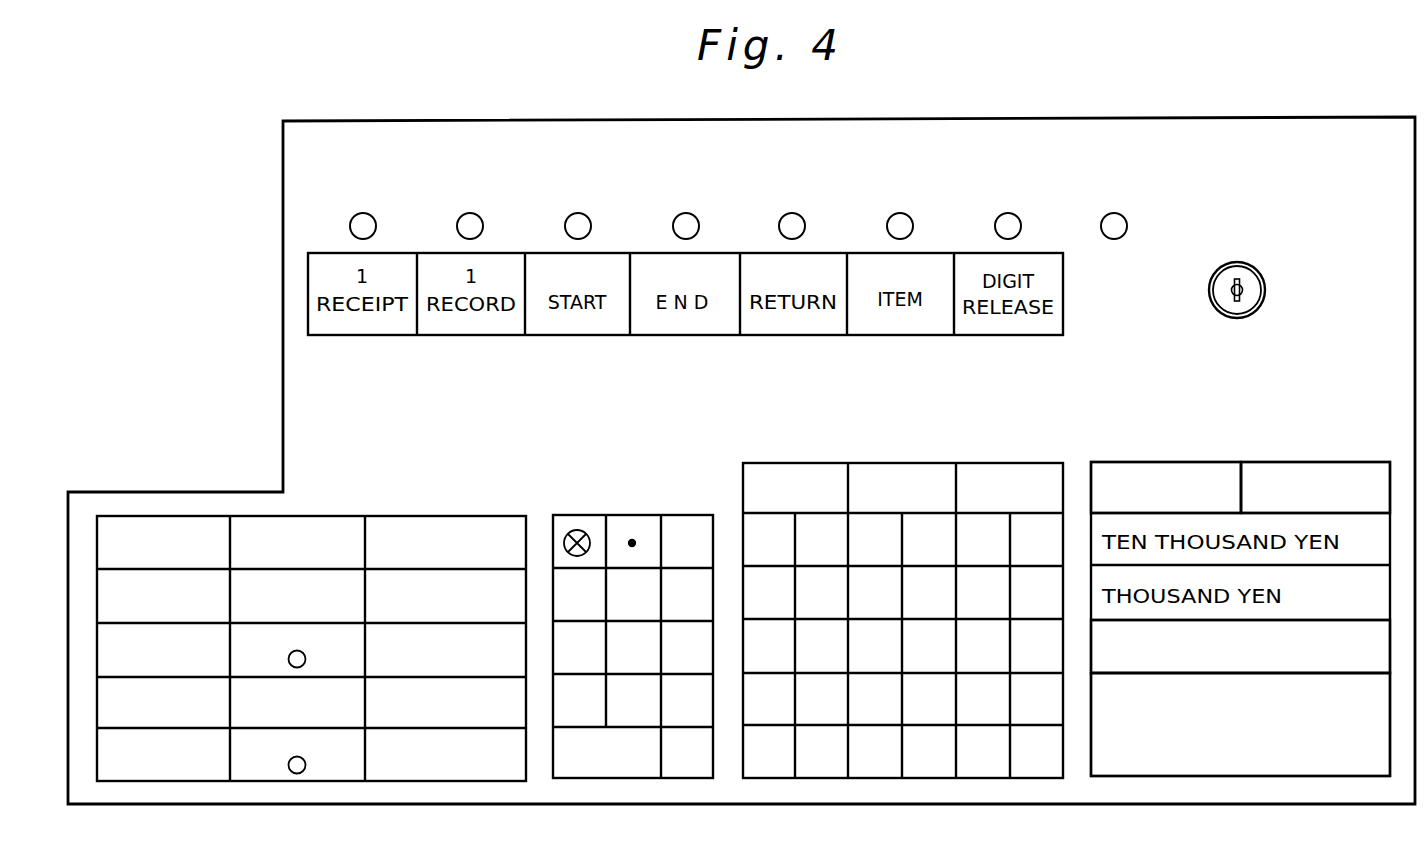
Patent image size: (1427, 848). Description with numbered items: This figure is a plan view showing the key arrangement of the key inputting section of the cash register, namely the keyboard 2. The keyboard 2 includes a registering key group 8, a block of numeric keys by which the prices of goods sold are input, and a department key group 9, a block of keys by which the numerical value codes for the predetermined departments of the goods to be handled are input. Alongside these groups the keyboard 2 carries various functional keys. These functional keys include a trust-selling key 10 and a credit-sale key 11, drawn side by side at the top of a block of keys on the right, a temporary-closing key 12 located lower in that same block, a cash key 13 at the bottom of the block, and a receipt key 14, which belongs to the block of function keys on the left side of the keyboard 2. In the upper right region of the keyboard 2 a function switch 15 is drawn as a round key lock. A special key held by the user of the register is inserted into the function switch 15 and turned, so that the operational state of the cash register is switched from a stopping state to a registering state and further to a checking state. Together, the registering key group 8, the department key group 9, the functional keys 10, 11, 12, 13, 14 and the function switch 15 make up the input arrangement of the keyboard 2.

The keyboard 2 is at (1301, 103).
The registering key group 8 is at (645, 785).
The department key group 9 is at (909, 782).
The trust-selling key 10 is at (1133, 461).
The credit-sale key 11 is at (1300, 461).
The temporary-closing key 12 is at (1378, 633).
The cash key 13 is at (1250, 777).
The receipt key 14 is at (93, 580).
The function switch 15 is at (1252, 263).